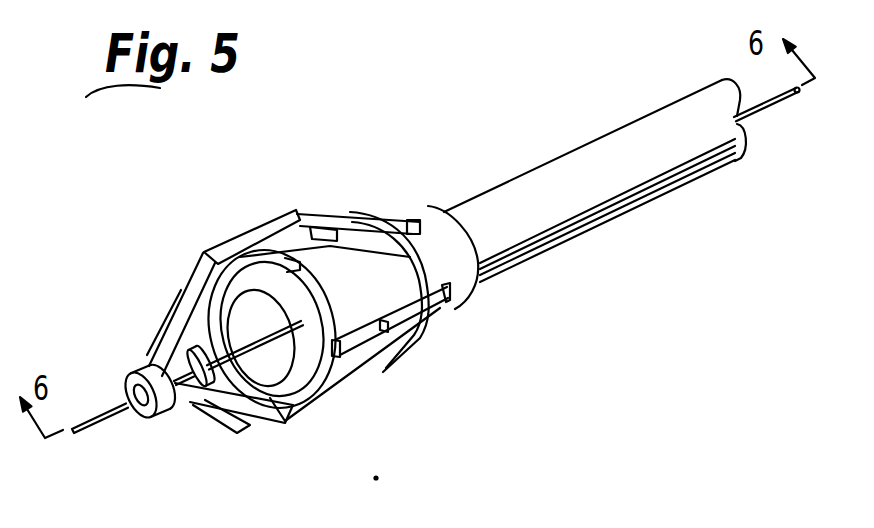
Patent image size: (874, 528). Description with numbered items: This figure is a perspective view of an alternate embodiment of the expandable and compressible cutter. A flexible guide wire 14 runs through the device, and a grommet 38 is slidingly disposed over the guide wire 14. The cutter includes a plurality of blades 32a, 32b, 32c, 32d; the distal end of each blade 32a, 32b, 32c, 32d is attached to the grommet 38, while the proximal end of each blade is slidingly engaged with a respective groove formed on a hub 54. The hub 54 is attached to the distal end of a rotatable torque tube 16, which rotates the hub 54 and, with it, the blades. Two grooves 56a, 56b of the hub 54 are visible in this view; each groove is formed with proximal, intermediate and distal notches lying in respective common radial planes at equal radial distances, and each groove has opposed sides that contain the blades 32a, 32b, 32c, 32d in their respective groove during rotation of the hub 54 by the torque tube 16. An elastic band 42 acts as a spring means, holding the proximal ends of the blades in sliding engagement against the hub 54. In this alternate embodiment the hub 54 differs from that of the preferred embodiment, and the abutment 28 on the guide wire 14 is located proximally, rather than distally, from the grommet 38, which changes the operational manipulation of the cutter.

The flexible guide wire 14 is at (757, 115).
The torque tube 16 is at (663, 180).
The abutment 28 is at (195, 383).
The blade 32a is at (235, 248).
The blade 32b is at (368, 382).
The blade 32c is at (238, 432).
The blade 32d is at (172, 300).
The grommet 38 is at (138, 372).
The elastic band 42 is at (360, 215).
The hub 54 is at (466, 287).
The groove 56a is at (320, 250).
The groove 56b is at (420, 322).